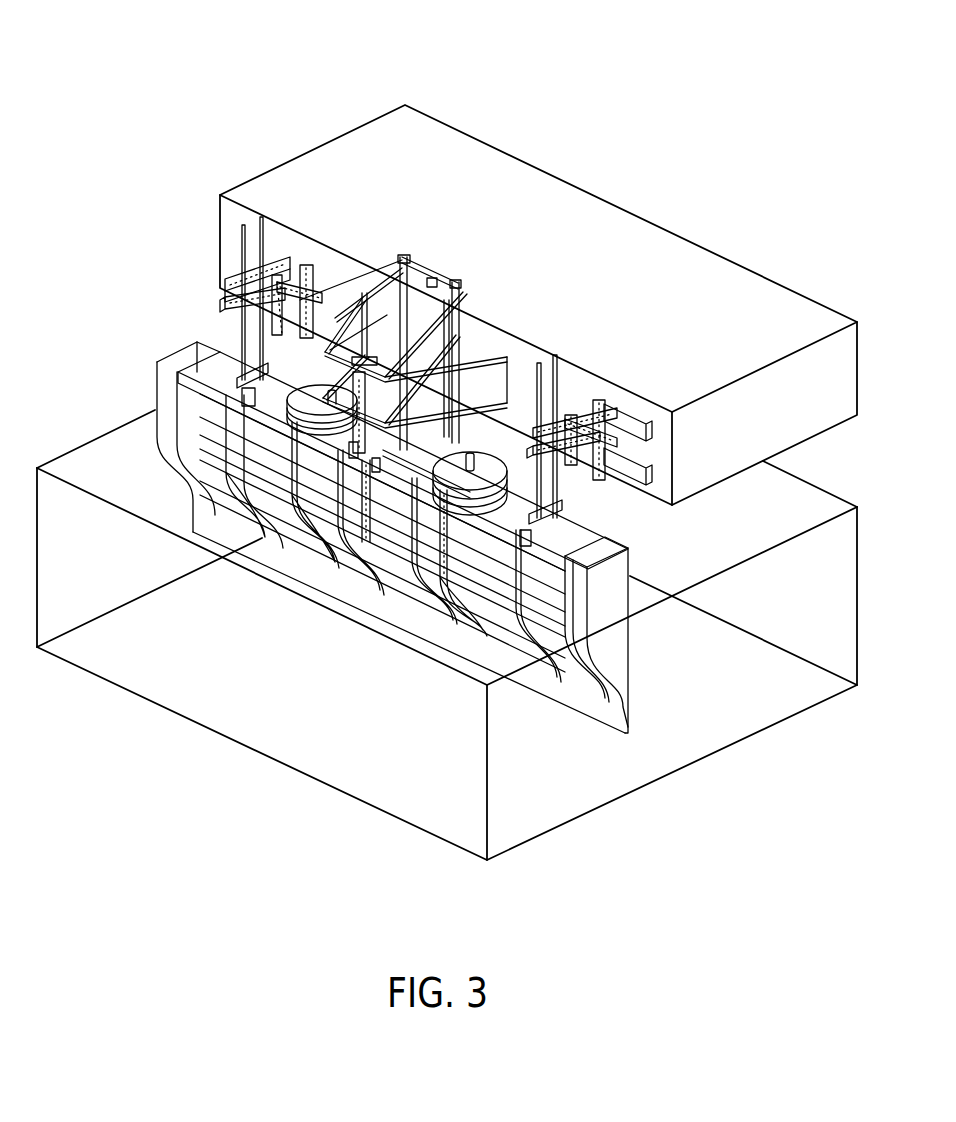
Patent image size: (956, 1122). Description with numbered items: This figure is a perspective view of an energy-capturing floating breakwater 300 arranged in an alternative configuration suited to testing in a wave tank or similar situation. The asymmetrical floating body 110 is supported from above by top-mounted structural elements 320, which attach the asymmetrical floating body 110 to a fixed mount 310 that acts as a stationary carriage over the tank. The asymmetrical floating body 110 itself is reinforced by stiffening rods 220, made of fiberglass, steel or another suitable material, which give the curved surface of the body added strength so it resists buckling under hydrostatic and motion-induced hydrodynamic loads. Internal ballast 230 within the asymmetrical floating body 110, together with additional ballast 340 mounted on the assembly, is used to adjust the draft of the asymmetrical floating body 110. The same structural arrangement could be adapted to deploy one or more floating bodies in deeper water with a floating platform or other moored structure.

The test system 300 is at (84, 42).
The fixed mount 310 is at (531, 266).
The asymmetrical floating body 110 is at (162, 385).
The stiffening rods 220 is at (285, 528).
The internal ballast 230 is at (433, 583).
The top-mounted structural elements 320 is at (226, 303).
The additional ballast 340 is at (316, 400).